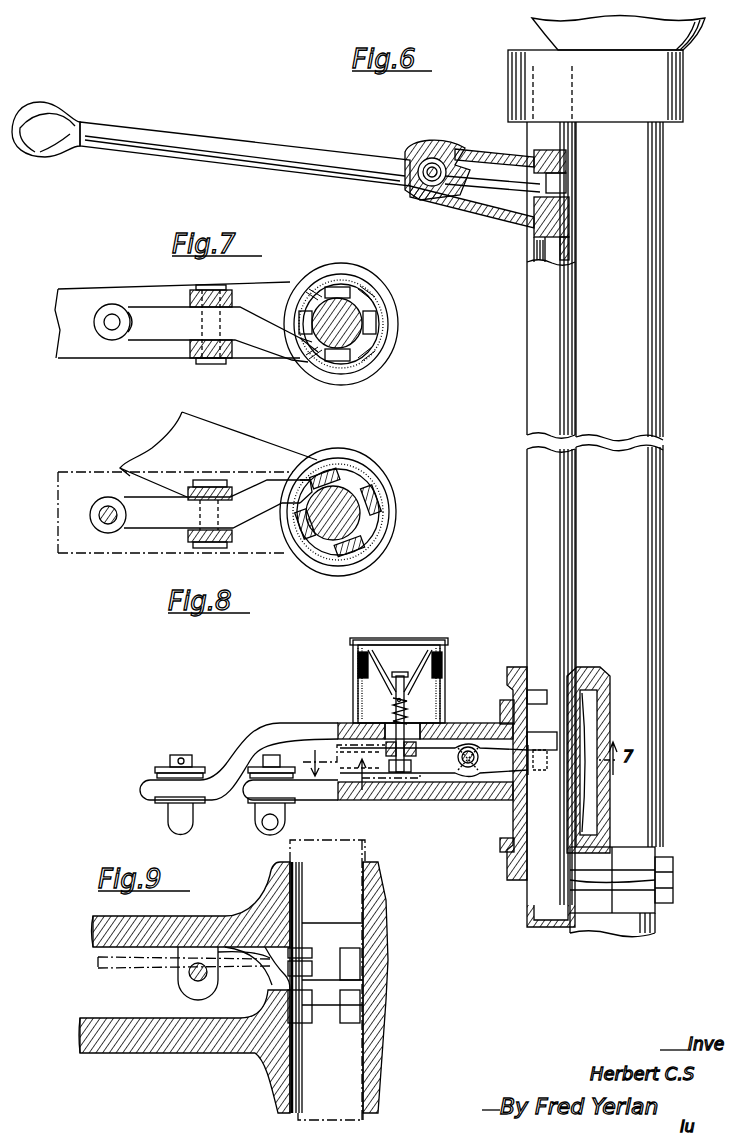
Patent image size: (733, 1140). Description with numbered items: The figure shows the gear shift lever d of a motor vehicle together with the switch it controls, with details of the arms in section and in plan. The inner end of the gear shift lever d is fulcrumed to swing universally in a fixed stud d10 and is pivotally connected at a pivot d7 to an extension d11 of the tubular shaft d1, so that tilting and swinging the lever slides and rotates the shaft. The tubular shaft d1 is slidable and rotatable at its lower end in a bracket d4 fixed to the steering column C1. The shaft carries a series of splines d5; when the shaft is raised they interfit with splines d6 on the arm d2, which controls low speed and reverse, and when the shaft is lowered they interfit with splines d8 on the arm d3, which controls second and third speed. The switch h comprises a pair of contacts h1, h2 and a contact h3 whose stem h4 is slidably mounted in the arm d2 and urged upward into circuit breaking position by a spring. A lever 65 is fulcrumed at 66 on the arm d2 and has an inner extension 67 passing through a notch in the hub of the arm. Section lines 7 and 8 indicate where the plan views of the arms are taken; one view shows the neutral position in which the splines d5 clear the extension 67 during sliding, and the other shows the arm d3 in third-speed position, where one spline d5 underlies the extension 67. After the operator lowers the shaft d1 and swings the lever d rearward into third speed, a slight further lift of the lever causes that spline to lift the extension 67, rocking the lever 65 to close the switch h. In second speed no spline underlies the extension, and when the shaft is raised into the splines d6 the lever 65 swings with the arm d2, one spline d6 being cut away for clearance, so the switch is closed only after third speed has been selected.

In FIG. 6, the gear shift lever d is at (320, 160).
In FIG. 6, the tubular shaft d1 is at (537, 503).
In FIG. 7, the tubular shaft d1 is at (365, 325).
In FIG. 8, the tubular shaft d1 is at (362, 510).
In FIG. 6, the arm d2 is at (285, 723).
In FIG. 7, the arm d2 is at (73, 288).
In FIG. 8, the arm d2 is at (135, 456).
In FIG. 9, the arm d2 is at (240, 916).
In FIG. 6, the arm d3 is at (245, 797).
In FIG. 9, the arm d3 is at (187, 1053).
In FIG. 6, the bracket d4 is at (608, 692).
In FIG. 6, the splines d5 is at (507, 812).
In FIG. 7, the splines d5 is at (340, 362).
In FIG. 8, the splines d5 is at (366, 522).
In FIG. 6, the splines d6 is at (588, 732).
In FIG. 7, the splines d6 is at (360, 338).
In FIG. 9, the splines d6 is at (356, 962).
In FIG. 6, the pivot pin of lever d7 is at (436, 166).
In FIG. 8, the splines d8 is at (362, 494).
In FIG. 9, the splines d8 is at (356, 1012).
In FIG. 6, the fixed stud d10 is at (570, 162).
In FIG. 6, the extension d11 is at (486, 216).
In FIG. 6, the steering column C1 is at (650, 503).
In FIG. 6, the switch h is at (430, 683).
In FIG. 6, the contact h1 is at (380, 668).
In FIG. 6, the contact h2 is at (420, 668).
In FIG. 6, the contact h3 is at (399, 672).
In FIG. 7, the contact h3 is at (110, 332).
In FIG. 8, the contact h3 is at (106, 528).
In FIG. 6, the stem h4 is at (406, 712).
In FIG. 6, the lever 65 is at (446, 778).
In FIG. 7, the lever 65 is at (166, 350).
In FIG. 8, the lever 65 is at (150, 530).
In FIG. 9, the lever 65 is at (132, 968).
In FIG. 6, the fulcrum 66 is at (474, 748).
In FIG. 7, the fulcrum 66 is at (232, 352).
In FIG. 8, the fulcrum 66 is at (222, 505).
In FIG. 9, the fulcrum 66 is at (193, 982).
In FIG. 6, the extension 67 is at (535, 733).
In FIG. 7, the extension 67 is at (304, 346).
In FIG. 8, the extension 67 is at (305, 494).
In FIG. 6, the section line 7- 7 is at (381, 774).
In FIG. 6, the section line 8- 8 is at (340, 758).